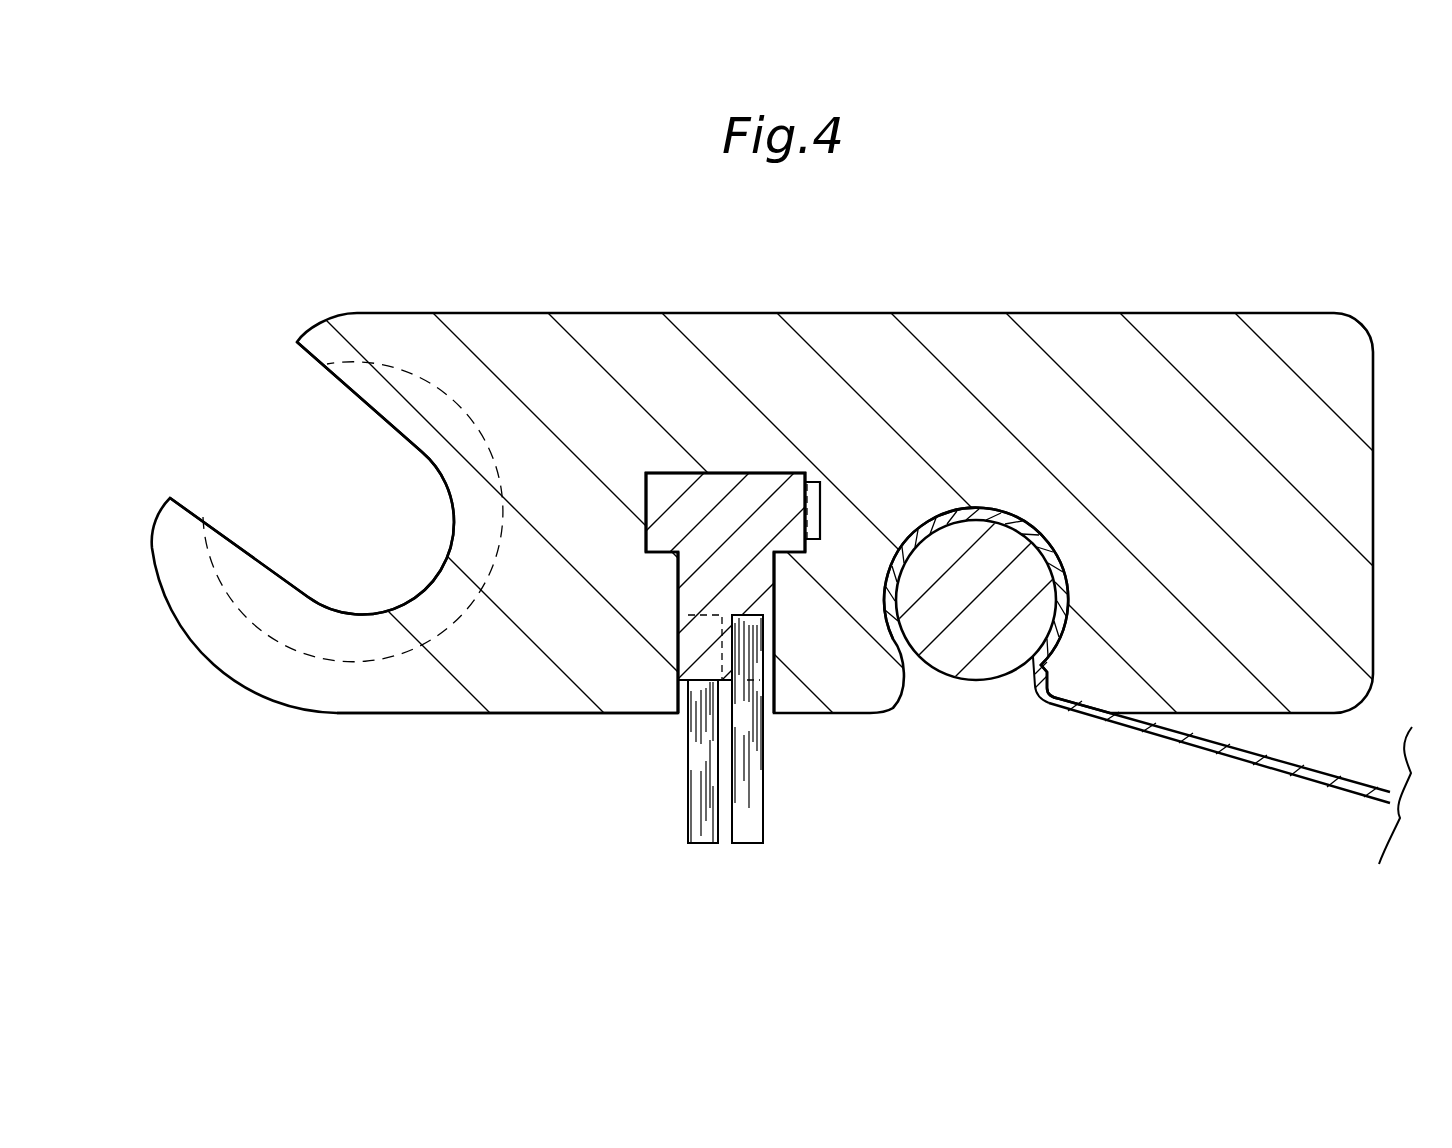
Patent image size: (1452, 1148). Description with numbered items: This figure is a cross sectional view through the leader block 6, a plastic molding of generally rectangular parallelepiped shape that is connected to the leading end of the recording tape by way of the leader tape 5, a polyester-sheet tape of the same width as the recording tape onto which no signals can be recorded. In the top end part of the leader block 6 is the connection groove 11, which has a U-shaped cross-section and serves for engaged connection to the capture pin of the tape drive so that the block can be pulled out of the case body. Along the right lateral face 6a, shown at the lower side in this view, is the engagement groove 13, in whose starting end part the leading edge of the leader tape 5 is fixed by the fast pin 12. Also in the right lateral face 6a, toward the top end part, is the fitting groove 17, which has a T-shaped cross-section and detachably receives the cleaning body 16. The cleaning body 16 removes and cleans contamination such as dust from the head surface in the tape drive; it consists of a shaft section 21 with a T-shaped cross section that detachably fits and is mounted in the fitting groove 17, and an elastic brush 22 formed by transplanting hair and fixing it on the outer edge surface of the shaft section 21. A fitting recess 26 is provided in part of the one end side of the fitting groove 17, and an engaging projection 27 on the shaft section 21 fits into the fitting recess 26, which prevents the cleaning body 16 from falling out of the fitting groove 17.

The leader tape 5 is at (1201, 750).
The leader block 6 is at (1160, 286).
The right lateral face 6a is at (522, 713).
The connection groove 11 is at (388, 418).
The fast pin 12 is at (997, 657).
The engagement groove 13 is at (922, 535).
The cleaning body 16 is at (740, 447).
The fitting groove 17 is at (680, 565).
The shaft section 21 is at (702, 504).
The brush 22 is at (705, 807).
The fitting recess 26 is at (807, 507).
The engaging projection 27 is at (812, 532).